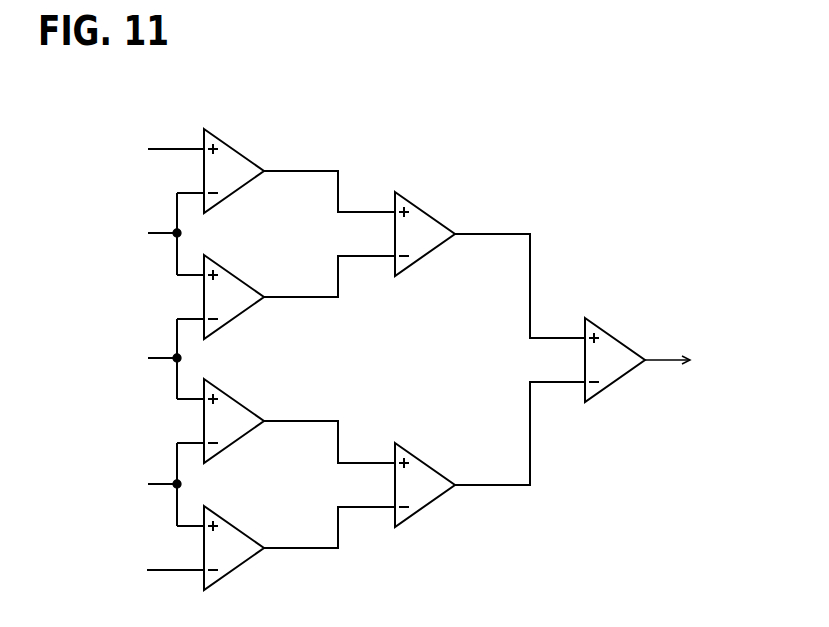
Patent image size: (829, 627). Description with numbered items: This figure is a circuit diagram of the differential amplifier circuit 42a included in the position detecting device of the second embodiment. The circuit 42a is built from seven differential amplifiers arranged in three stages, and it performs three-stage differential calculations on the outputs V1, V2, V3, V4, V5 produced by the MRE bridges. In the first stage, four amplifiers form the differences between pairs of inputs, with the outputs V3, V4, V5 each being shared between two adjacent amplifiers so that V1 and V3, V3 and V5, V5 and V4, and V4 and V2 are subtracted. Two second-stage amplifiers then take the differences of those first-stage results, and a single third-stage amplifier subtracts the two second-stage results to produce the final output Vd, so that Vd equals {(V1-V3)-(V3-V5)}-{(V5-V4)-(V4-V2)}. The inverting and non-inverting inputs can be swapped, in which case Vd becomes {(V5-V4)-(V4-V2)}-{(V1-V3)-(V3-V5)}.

The differential amplifier circuit 42a is at (441, 334).
The output V1 is at (159, 150).
The output V2 is at (159, 570).
The output V3 is at (159, 234).
The output V4 is at (159, 484).
The output V5 is at (159, 359).
The output Vd is at (706, 357).